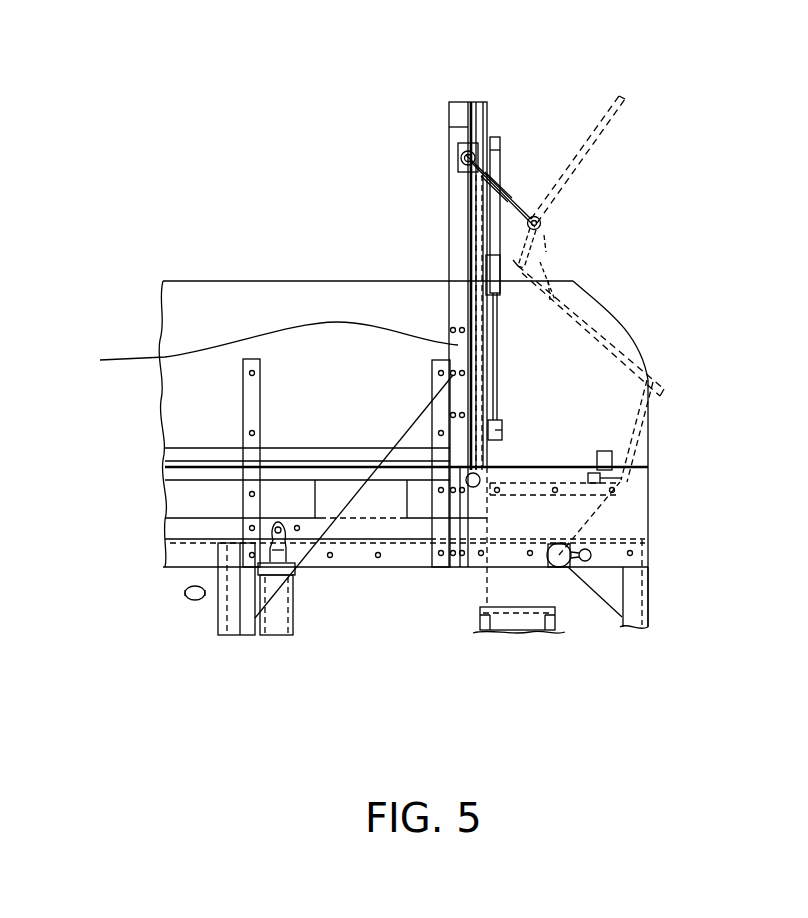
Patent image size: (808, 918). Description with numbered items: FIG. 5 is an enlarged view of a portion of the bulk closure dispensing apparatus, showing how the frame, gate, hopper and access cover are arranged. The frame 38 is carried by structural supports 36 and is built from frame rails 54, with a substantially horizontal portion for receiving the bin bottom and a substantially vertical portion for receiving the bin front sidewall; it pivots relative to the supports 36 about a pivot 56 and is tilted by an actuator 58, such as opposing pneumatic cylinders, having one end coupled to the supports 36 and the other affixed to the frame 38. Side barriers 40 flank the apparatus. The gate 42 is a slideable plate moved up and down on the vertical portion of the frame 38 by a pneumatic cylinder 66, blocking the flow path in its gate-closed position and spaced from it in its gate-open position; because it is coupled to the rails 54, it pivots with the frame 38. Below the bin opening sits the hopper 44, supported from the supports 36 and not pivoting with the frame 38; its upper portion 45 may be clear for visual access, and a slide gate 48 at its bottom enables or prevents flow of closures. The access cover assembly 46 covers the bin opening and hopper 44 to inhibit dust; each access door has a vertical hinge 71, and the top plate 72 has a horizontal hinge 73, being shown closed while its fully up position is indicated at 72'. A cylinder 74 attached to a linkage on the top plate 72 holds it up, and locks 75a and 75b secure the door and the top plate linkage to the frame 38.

The supports 36 is at (648, 625).
The frame 38 is at (458, 112).
The side barriers 40 is at (278, 288).
The gate 42 is at (490, 404).
The hopper 44 is at (606, 514).
The upper portion 45 is at (640, 426).
The access cover assembly 46 is at (700, 392).
The slide gate 48 is at (560, 616).
The frame rails 54 is at (181, 452).
The pivot 56 is at (473, 487).
The actuator 58 is at (295, 623).
The pneumatic cylinder 66 is at (548, 293).
The vertical hinge 71 is at (260, 348).
The top plate 72 is at (635, 331).
The top plate open position 72' is at (623, 158).
The horizontal hinge 73 is at (546, 260).
The cylinder 74 is at (507, 183).
The lock 75a is at (626, 481).
The lock 75b is at (463, 263).